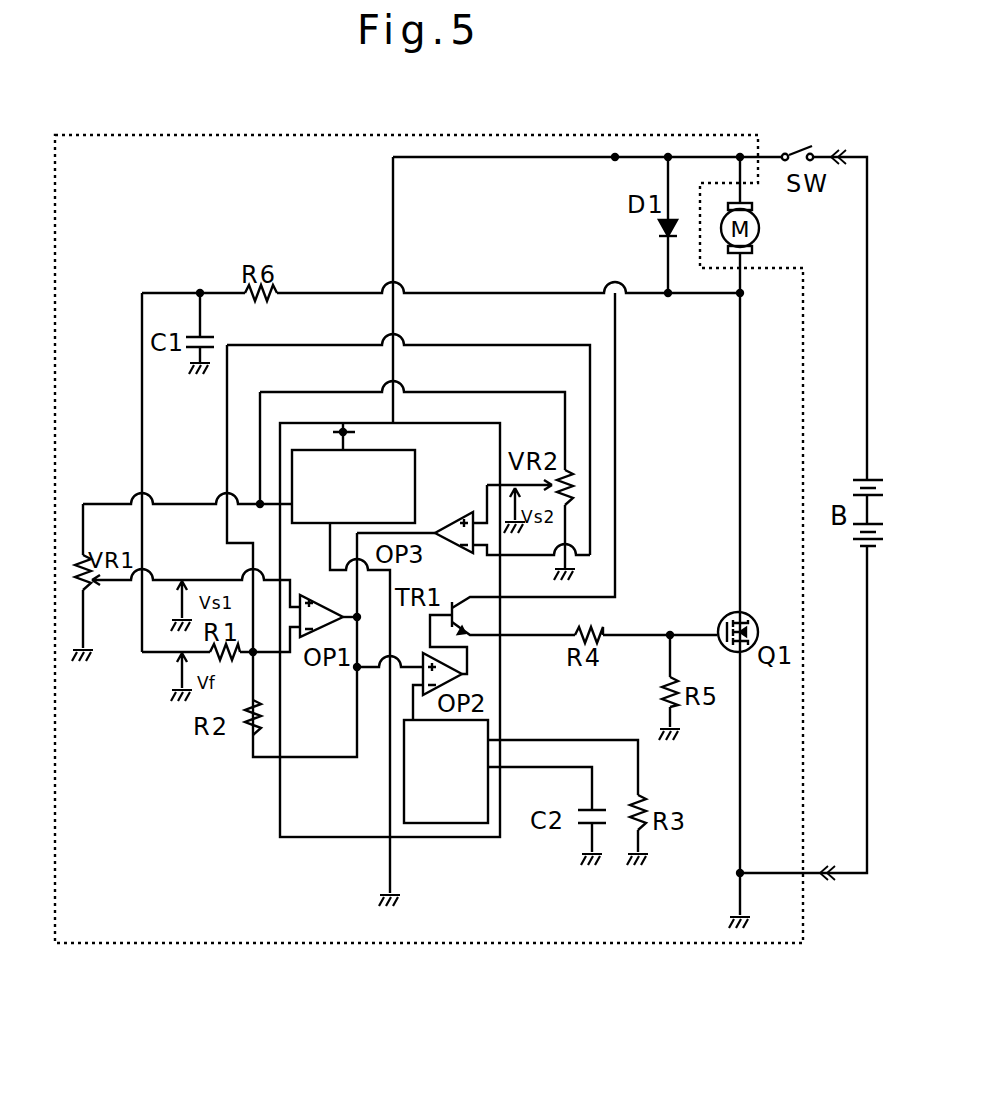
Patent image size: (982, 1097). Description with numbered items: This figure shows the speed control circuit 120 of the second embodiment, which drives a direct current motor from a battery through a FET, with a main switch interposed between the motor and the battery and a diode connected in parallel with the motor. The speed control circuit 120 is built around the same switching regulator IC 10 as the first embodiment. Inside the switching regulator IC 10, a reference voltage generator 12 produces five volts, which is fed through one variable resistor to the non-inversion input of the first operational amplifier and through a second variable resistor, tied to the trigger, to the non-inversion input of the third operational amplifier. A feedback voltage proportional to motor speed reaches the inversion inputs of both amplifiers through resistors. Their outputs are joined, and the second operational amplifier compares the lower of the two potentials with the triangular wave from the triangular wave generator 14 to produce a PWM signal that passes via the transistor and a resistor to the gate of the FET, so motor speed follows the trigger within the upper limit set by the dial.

The speed control circuit 120 is at (572, 115).
The switching regulator IC 10 is at (410, 410).
The reference voltage generator 12 is at (415, 476).
The triangular wave generator 14 is at (404, 800).